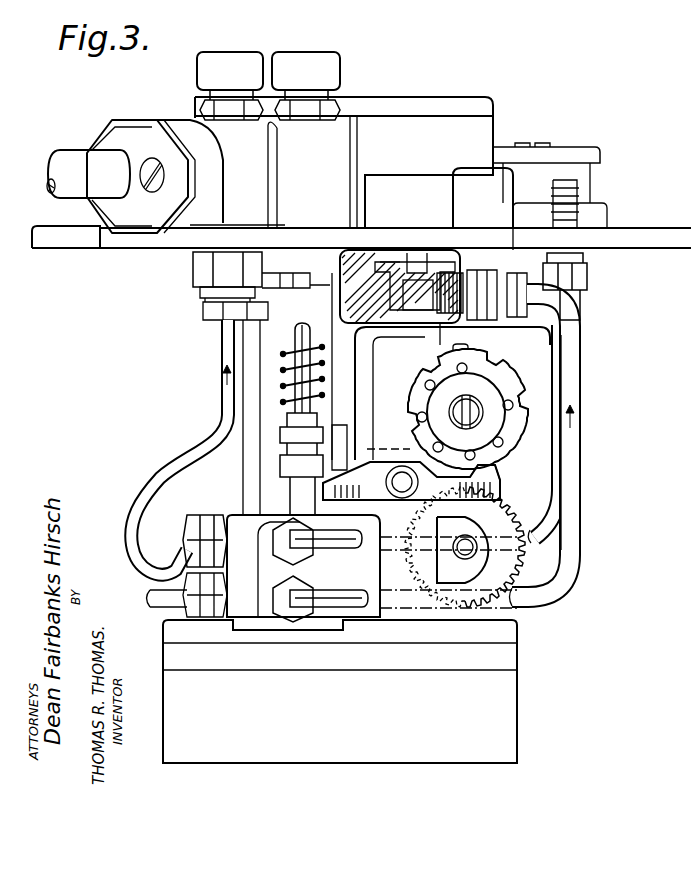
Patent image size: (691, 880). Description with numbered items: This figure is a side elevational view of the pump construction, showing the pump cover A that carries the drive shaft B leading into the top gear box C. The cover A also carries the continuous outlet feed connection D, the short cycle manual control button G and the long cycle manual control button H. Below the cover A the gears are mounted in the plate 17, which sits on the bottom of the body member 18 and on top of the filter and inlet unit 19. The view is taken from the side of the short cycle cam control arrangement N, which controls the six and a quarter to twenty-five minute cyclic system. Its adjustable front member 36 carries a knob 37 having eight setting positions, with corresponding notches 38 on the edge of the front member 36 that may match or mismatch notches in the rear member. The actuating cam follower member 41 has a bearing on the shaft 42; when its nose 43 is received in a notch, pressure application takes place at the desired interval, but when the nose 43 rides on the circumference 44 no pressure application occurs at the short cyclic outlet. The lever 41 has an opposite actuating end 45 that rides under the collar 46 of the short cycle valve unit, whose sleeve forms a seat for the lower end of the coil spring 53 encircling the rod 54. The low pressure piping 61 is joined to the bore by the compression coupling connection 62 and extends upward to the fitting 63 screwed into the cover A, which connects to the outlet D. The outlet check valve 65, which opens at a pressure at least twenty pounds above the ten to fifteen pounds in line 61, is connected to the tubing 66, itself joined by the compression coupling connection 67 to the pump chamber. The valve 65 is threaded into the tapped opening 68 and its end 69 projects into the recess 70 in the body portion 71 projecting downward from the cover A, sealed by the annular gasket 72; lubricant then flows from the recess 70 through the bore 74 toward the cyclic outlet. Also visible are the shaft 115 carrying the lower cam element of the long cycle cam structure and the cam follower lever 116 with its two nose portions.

The pump cover A is at (655, 228).
The drive shaft B is at (64, 160).
The top gear box C is at (470, 135).
The continuous outlet feed D is at (575, 180).
The short cycle manual control button G is at (306, 52).
The long cycle manual control button H is at (243, 52).
The short cycle cam control arrangement N is at (538, 402).
The plate 17 is at (505, 660).
The body member 18 is at (505, 633).
The filter and inlet unit 19 is at (500, 708).
The adjustable front member 36 is at (500, 378).
The knob 37 is at (432, 395).
The notches 38 is at (460, 344).
The actuating cam follower member 41 is at (380, 462).
The shaft 42 is at (372, 540).
The nose 43 is at (495, 476).
The circumference 44 is at (408, 402).
The actuating end 45 is at (330, 490).
The collar 46 is at (290, 464).
The coil spring 53 is at (325, 368).
The rod 54 is at (308, 316).
The piping 61 is at (340, 540).
The compression coupling connection 62 is at (285, 555).
The fitting 63 is at (590, 276).
The outlet check valve 65 is at (482, 270).
The piping or tubing 66 is at (578, 450).
The compression coupling connection 67 is at (290, 615).
The tapped opening 68 is at (440, 330).
The end 69 is at (403, 293).
The recess 70 is at (385, 275).
The body portion 71 is at (345, 290).
The annular gasket 72 is at (415, 252).
The bore 74 is at (420, 252).
The shaft 115 is at (468, 545).
The cam follower lever 116 is at (480, 608).